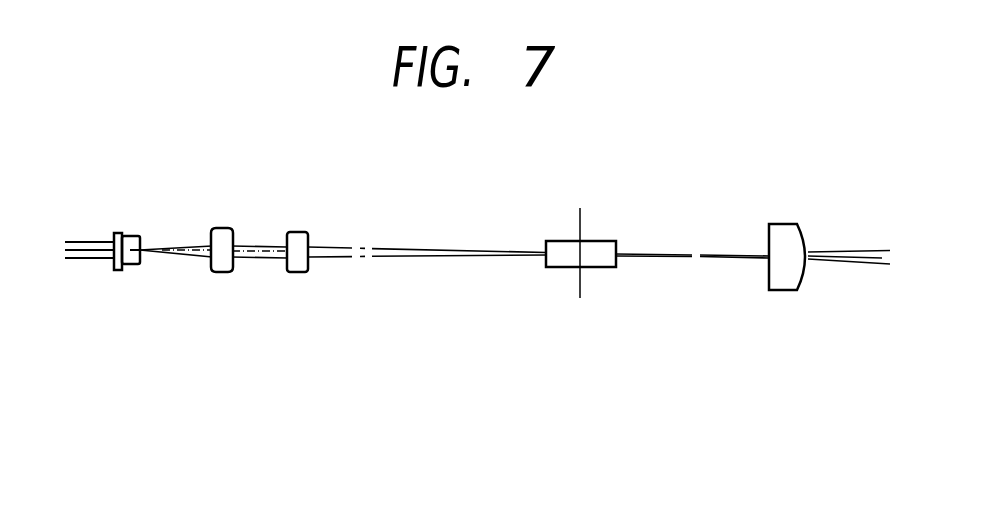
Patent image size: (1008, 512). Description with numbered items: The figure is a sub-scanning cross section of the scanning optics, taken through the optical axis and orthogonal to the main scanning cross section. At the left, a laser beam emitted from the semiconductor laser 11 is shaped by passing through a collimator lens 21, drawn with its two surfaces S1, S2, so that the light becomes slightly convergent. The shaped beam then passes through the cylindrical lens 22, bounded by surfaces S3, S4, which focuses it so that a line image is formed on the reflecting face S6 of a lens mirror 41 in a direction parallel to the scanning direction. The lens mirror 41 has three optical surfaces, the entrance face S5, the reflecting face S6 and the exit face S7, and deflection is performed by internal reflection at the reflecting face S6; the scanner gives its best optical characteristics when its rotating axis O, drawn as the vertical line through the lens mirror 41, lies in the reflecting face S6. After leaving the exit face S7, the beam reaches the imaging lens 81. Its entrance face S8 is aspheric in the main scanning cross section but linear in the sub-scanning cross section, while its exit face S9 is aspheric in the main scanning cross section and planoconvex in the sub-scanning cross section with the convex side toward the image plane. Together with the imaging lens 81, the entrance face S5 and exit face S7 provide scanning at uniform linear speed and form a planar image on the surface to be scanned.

The semiconductor laser 11 is at (126, 236).
The collimator lens 21 is at (222, 272).
The cylindrical lens 22 is at (292, 232).
The lens mirror 41 is at (553, 267).
The imaging lens 81 is at (786, 232).
The rotating axis O is at (580, 222).
The surface S1 is at (212, 258).
The surface S2 is at (232, 258).
The surface S3 is at (287, 248).
The surface S4 is at (308, 250).
The entrance face S5 is at (548, 258).
The reflecting face S6 is at (582, 255).
The exit face S7 is at (616, 258).
The entrance face of the imaging lens S8 is at (768, 256).
The exit face of the imaging lens S9 is at (810, 258).